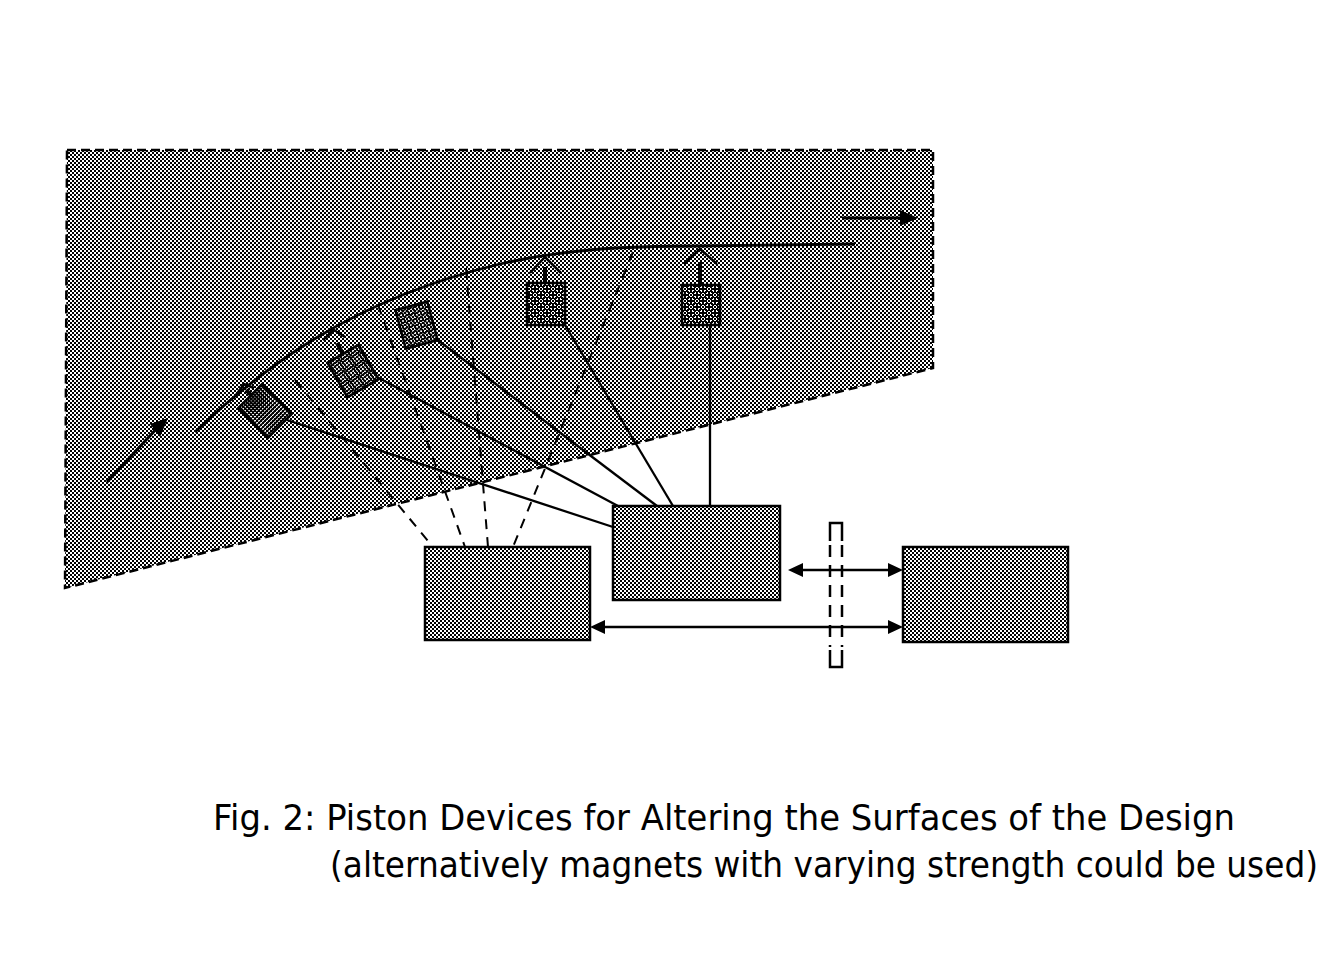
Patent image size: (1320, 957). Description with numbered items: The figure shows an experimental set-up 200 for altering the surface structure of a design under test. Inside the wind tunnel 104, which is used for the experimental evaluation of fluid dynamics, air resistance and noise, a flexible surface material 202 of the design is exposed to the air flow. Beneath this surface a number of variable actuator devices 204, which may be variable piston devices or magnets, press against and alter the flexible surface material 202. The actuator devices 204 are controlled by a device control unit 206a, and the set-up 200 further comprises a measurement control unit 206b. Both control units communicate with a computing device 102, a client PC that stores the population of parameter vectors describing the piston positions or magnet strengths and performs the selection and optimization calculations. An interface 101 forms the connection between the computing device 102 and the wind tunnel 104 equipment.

The experimental set-up 200 is at (611, 378).
The wind tunnel 104 is at (499, 349).
The flexible surface material 202 is at (525, 306).
The actuator devices 204 is at (555, 388).
The device control unit 206a is at (699, 536).
The measurement control unit 206b is at (507, 613).
The computing device 102 is at (985, 576).
The interface 101 is at (831, 614).